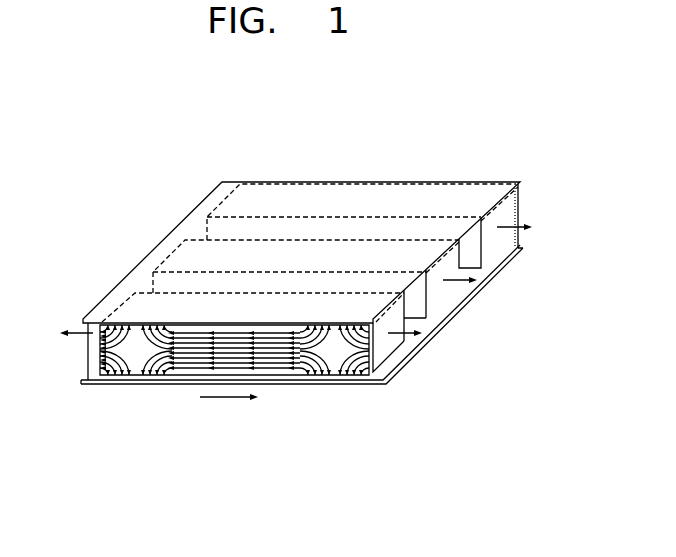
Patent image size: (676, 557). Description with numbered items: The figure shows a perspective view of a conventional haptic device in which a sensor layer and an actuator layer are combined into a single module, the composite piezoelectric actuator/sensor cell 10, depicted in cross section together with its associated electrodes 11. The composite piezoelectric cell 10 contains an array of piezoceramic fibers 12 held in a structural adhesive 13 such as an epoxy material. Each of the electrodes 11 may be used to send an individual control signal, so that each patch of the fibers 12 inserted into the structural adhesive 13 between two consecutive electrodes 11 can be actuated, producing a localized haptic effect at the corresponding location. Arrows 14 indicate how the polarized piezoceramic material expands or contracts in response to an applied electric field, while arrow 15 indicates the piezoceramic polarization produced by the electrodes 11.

The composite piezoelectric actuator/sensor cell 10 is at (346, 130).
The electrodes 11 is at (320, 447).
The piezoceramic fibers 12 is at (291, 244).
The structural adhesive 13 is at (228, 198).
The arrows 14 is at (448, 280).
The arrow 15 is at (226, 400).